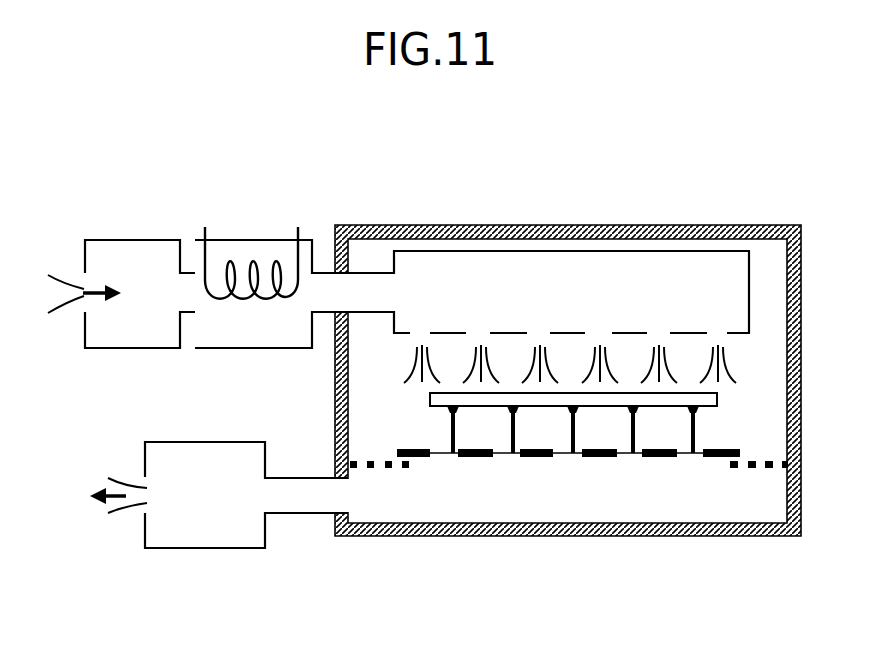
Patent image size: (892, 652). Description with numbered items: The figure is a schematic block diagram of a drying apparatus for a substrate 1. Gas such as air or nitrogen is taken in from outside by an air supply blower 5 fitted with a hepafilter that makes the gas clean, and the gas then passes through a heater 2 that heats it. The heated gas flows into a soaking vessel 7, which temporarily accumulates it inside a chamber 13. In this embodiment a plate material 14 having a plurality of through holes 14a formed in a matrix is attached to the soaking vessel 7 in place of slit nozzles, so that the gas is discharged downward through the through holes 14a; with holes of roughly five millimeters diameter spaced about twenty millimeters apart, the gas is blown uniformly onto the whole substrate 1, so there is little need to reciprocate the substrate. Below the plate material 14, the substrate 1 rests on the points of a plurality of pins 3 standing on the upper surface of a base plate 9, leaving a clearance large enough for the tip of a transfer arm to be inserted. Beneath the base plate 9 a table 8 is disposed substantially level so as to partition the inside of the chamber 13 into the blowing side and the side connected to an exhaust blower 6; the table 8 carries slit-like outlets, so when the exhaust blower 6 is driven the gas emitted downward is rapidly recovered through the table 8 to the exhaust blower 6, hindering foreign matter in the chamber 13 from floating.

The substrate 1 is at (713, 398).
The heater 2 is at (205, 262).
The pins 3 is at (697, 430).
The air supply blower 5 is at (133, 252).
The exhaust blower 6 is at (202, 455).
The soaking vessel 7 is at (437, 252).
The table 8 is at (770, 470).
The base plate 9 is at (716, 458).
The chamber 13 is at (700, 225).
The plate material 14 is at (712, 333).
The through holes 14a is at (415, 342).